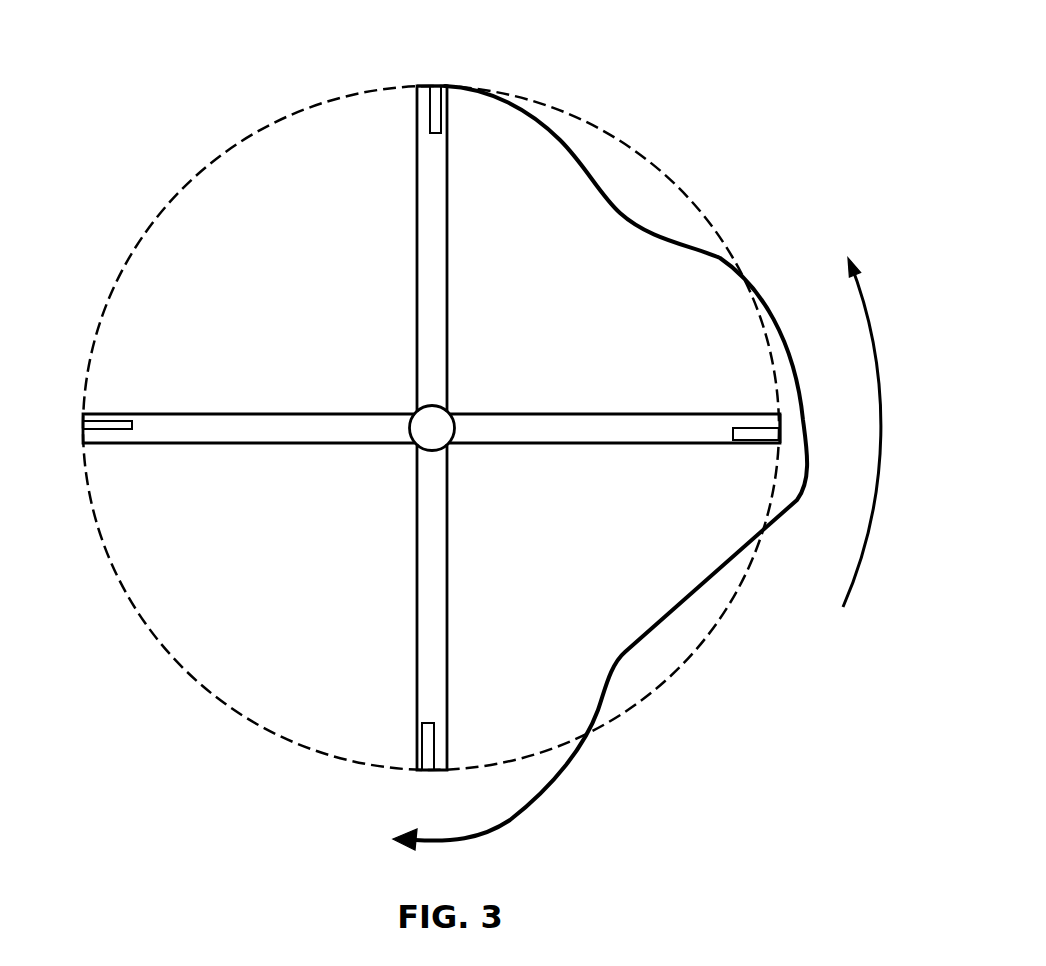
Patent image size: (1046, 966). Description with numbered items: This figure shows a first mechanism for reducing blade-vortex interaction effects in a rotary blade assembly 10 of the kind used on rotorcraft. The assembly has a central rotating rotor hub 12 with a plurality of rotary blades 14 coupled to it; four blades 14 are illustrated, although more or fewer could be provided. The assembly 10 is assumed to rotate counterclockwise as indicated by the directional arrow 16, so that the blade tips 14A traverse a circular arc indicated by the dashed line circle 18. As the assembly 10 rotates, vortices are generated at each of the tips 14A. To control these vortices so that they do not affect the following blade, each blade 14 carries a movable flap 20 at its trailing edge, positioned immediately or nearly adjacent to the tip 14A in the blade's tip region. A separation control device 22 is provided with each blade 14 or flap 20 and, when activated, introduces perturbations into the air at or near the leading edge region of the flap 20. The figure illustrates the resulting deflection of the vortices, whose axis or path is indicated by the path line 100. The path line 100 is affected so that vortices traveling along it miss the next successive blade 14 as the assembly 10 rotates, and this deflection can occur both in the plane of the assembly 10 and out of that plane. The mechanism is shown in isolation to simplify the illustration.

The rotary blade assembly 10 is at (476, 390).
The rotor hub 12 is at (466, 400).
The blades 14 is at (431, 390).
The blade tips 14A is at (461, 211).
The directional arrow 16 is at (900, 432).
The dashed line circle 18 is at (431, 428).
The movable flap 20 is at (598, 289).
The separation control device 22 is at (431, 428).
The path line 100 is at (613, 468).